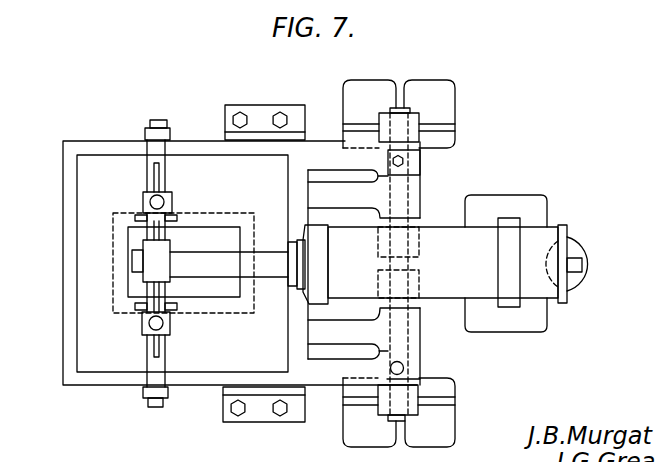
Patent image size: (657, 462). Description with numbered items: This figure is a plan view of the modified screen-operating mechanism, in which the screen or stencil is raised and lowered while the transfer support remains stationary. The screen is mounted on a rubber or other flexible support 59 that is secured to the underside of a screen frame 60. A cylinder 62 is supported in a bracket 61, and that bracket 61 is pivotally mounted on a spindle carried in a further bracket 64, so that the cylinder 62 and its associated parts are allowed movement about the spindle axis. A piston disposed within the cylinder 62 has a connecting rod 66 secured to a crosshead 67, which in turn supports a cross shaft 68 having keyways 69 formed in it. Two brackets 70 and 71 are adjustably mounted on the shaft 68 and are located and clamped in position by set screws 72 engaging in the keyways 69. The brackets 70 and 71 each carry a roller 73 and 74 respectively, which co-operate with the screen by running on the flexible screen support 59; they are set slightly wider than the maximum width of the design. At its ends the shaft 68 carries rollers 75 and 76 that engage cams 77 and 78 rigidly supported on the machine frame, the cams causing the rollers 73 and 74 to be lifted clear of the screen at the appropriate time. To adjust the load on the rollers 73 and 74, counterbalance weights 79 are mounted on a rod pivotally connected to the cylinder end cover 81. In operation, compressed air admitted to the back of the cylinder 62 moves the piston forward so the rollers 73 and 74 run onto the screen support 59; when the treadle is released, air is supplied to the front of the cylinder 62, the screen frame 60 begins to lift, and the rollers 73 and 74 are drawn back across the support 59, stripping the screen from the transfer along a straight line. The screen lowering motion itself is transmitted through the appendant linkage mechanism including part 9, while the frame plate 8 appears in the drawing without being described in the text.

The frame plate 8 is at (320, 152).
The linkage mechanism 9 is at (405, 178).
The flexible support 59 is at (241, 307).
The screen frame 60 is at (67, 195).
The bracket 61 is at (512, 232).
The cylinder 62 is at (467, 247).
The further bracket 64 is at (520, 323).
The connecting rod 66 is at (212, 263).
The crosshead 67 is at (153, 268).
The cross shaft 68 is at (147, 156).
The keyways 69 is at (159, 178).
The bracket 70 is at (173, 199).
The bracket 71 is at (171, 327).
The set screws 72 is at (151, 198).
The roller 73 is at (140, 217).
The roller 74 is at (176, 304).
The roller 75 is at (157, 125).
The roller 76 is at (145, 393).
The cam 77 is at (253, 130).
The cam 78 is at (225, 389).
The counterbalance weights 79 is at (583, 288).
The cylinder end cover 81 is at (559, 247).